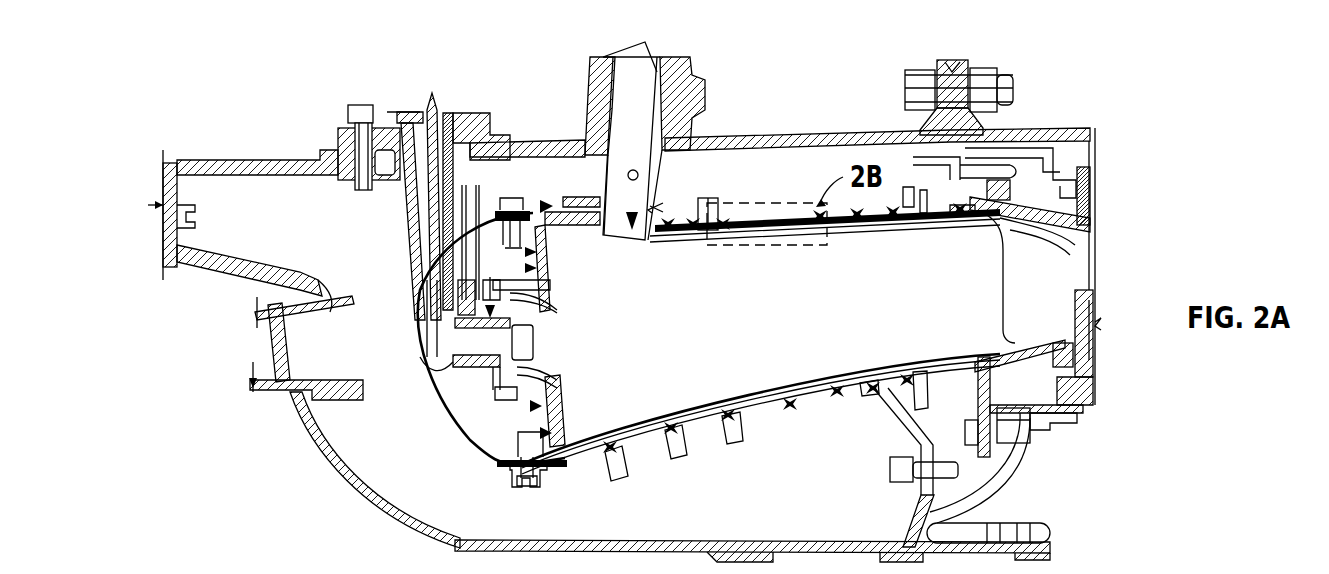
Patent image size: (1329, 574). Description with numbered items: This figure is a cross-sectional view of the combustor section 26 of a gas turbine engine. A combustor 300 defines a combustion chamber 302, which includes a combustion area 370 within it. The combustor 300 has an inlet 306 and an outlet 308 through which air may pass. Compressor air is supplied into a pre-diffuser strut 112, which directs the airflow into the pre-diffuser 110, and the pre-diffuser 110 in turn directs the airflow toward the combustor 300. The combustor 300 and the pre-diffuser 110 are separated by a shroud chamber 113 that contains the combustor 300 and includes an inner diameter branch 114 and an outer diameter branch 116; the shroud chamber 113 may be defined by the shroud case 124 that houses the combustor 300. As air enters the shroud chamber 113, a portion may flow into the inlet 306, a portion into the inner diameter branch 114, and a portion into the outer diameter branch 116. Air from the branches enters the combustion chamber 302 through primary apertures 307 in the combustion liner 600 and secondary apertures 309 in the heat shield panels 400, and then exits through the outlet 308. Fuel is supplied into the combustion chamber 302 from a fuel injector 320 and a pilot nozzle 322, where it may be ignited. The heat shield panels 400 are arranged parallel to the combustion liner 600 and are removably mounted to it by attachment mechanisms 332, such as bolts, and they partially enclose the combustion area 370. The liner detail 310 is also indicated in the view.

The combustor section 26 is at (810, 38).
The pre-diffuser 110 is at (320, 312).
The pre-diffuser strut 112 is at (268, 352).
The shroud chamber 113 is at (408, 453).
The inner diameter branch 114 is at (880, 493).
The outer diameter branch 116 is at (714, 176).
The shroud case 124 is at (705, 138).
The combustor 300 is at (790, 205).
The combustion chamber 302 is at (723, 340).
The inlet 306 is at (552, 336).
The primary apertures 307 is at (923, 213).
The outlet 308 is at (1085, 293).
The secondary apertures 309 is at (923, 220).
The heat shield tile 310 is at (770, 233).
The fuel injector 320 is at (447, 137).
The pilot nozzle 322 is at (533, 333).
The attachment mechanism 332 is at (737, 445).
The combustion area 370 is at (665, 310).
The heat shield panels 400 is at (540, 240).
The combustion liner 600 is at (493, 212).